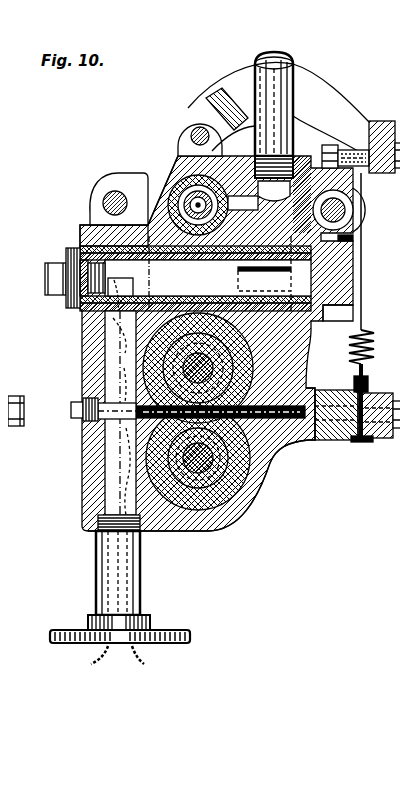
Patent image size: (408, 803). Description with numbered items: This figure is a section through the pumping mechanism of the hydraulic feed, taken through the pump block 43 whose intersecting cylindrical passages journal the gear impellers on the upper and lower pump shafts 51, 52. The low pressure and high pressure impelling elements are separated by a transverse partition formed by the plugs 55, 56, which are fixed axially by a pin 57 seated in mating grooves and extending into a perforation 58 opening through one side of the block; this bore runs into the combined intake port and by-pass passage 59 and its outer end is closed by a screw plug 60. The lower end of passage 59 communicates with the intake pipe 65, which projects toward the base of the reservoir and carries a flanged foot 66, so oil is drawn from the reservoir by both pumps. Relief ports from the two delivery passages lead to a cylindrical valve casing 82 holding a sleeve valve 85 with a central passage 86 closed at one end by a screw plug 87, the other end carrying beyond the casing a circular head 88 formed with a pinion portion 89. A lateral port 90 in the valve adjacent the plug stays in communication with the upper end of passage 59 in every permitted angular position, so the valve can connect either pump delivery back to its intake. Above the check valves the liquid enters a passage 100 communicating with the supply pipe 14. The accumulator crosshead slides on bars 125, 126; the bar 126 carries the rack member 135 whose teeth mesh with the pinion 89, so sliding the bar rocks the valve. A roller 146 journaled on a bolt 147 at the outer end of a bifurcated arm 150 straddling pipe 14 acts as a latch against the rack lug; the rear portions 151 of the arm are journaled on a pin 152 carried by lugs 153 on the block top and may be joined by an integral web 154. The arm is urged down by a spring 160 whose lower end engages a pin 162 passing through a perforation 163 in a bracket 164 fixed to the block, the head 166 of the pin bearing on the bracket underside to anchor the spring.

The supply pipe 14 is at (287, 62).
The pump block 43 is at (238, 513).
The upper pump shaft 51 is at (172, 357).
The lower pump shaft 52 is at (188, 480).
The plug 55 is at (268, 436).
The plug 56 is at (258, 488).
The pin 57 is at (306, 440).
The perforation 58 is at (312, 427).
The combined intake port and by-pass passage 59 is at (102, 443).
The screw plug 60 is at (75, 393).
The intake pipe 65 is at (92, 541).
The flanged foot 66 is at (153, 624).
The cylindrical valve casing 82 is at (216, 343).
The sleeve valve 85 is at (98, 225).
The central passage 86 is at (150, 275).
The screw plug 87 is at (58, 242).
The circular head 88 is at (334, 260).
The pinion portion 89 is at (337, 311).
The port 90 is at (72, 313).
The passage 100 is at (170, 152).
The bar 125 is at (103, 188).
The bar 126 is at (337, 202).
The rack member 135 is at (288, 176).
The roller 146 is at (325, 137).
The bolt 147 is at (392, 162).
The bifurcated arm 150 is at (368, 113).
The rear portions 151 is at (203, 80).
The pin 152 is at (189, 120).
The lugs 153 is at (170, 148).
The integral web 154 is at (222, 84).
The spring 160 is at (368, 346).
The pin 162 is at (361, 371).
The perforation 163 is at (348, 382).
The bracket 164 is at (374, 432).
The head 166 is at (352, 434).